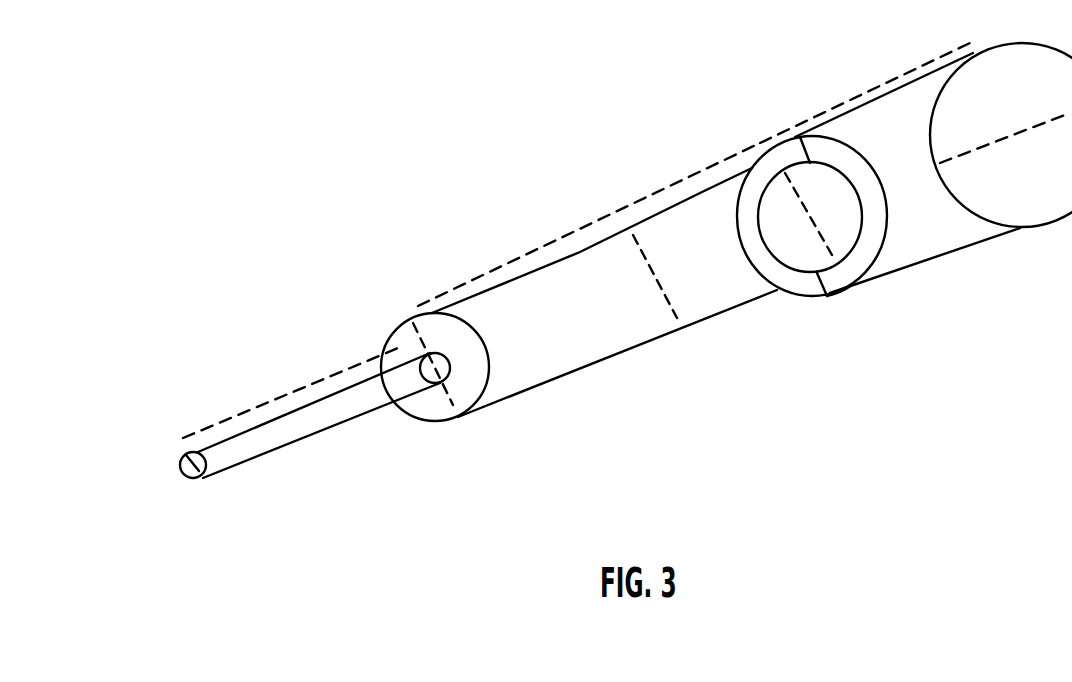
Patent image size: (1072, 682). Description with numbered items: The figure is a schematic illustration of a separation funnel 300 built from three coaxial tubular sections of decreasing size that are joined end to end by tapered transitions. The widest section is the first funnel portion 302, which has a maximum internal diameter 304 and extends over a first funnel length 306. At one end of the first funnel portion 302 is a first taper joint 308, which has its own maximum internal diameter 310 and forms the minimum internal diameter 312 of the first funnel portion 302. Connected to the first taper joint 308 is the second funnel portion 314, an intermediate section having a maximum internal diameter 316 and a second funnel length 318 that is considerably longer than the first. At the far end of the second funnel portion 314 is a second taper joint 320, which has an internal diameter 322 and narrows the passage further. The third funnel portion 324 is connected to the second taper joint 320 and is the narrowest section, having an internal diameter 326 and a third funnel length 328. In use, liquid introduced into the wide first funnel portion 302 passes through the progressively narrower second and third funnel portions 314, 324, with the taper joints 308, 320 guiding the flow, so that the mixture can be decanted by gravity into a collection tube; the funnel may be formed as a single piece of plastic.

The separation funnel 300 is at (136, 84).
The first funnel portion 302 is at (947, 255).
The maximum internal diameter 304 is at (1028, 128).
The first funnel length 306 is at (870, 90).
The first taper joint 308 is at (773, 147).
The maximum internal diameter 310 is at (817, 298).
The minimum internal diameter 312 is at (800, 208).
The second funnel portion 314 is at (643, 347).
The maximum internal diameter 316 is at (652, 273).
The second funnel length 318 is at (623, 222).
The second taper joint 320 is at (433, 328).
The internal diameter 322 is at (445, 385).
The third funnel portion 324 is at (290, 455).
The internal diameter 326 is at (182, 472).
The third funnel length 328 is at (300, 385).